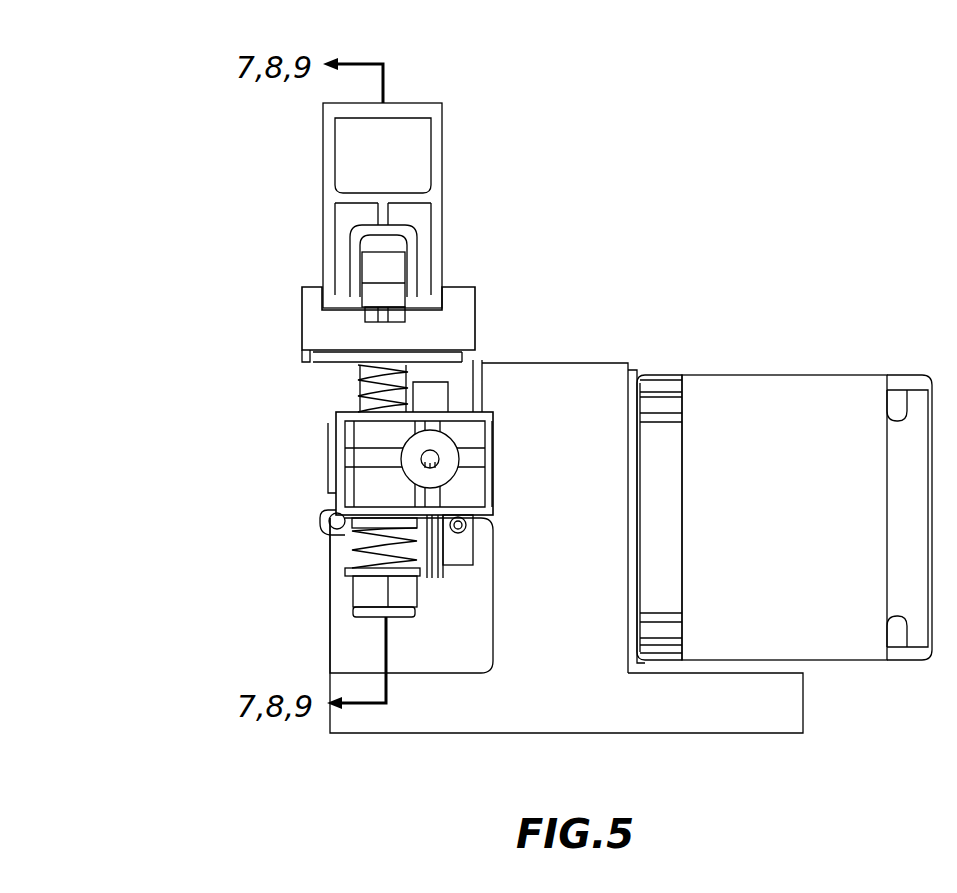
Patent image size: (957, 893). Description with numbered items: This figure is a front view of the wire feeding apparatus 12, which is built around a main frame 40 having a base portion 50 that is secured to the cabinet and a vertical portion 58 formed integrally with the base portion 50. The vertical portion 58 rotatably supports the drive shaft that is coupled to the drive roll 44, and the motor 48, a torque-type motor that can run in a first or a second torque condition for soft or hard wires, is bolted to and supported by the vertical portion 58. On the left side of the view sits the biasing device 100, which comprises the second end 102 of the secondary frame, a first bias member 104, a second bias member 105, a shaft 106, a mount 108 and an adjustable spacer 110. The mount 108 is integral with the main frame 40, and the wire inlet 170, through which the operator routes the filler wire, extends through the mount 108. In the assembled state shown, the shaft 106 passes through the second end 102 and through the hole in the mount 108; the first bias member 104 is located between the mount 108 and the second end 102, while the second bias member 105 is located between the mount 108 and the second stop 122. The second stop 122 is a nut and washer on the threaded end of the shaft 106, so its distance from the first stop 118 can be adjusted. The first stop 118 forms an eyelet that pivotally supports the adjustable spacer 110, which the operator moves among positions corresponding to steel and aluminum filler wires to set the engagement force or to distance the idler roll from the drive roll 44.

The wire feeding apparatus 12 is at (786, 255).
The main frame 40 is at (606, 320).
The drive roll 44 is at (336, 445).
The motor 48 is at (853, 362).
The base portion 50 is at (702, 733).
The vertical portion 58 is at (616, 363).
The biasing device 100 is at (219, 416).
The second end of the secondary frame 102 is at (496, 296).
The first bias member 104 is at (366, 385).
The second bias member 105 is at (353, 530).
The shaft 106 is at (356, 540).
The mount 108 is at (340, 490).
The adjustable spacer 110 is at (466, 188).
The first stop 118 is at (387, 275).
The second stop 122 is at (344, 608).
The inlet 170 is at (413, 451).